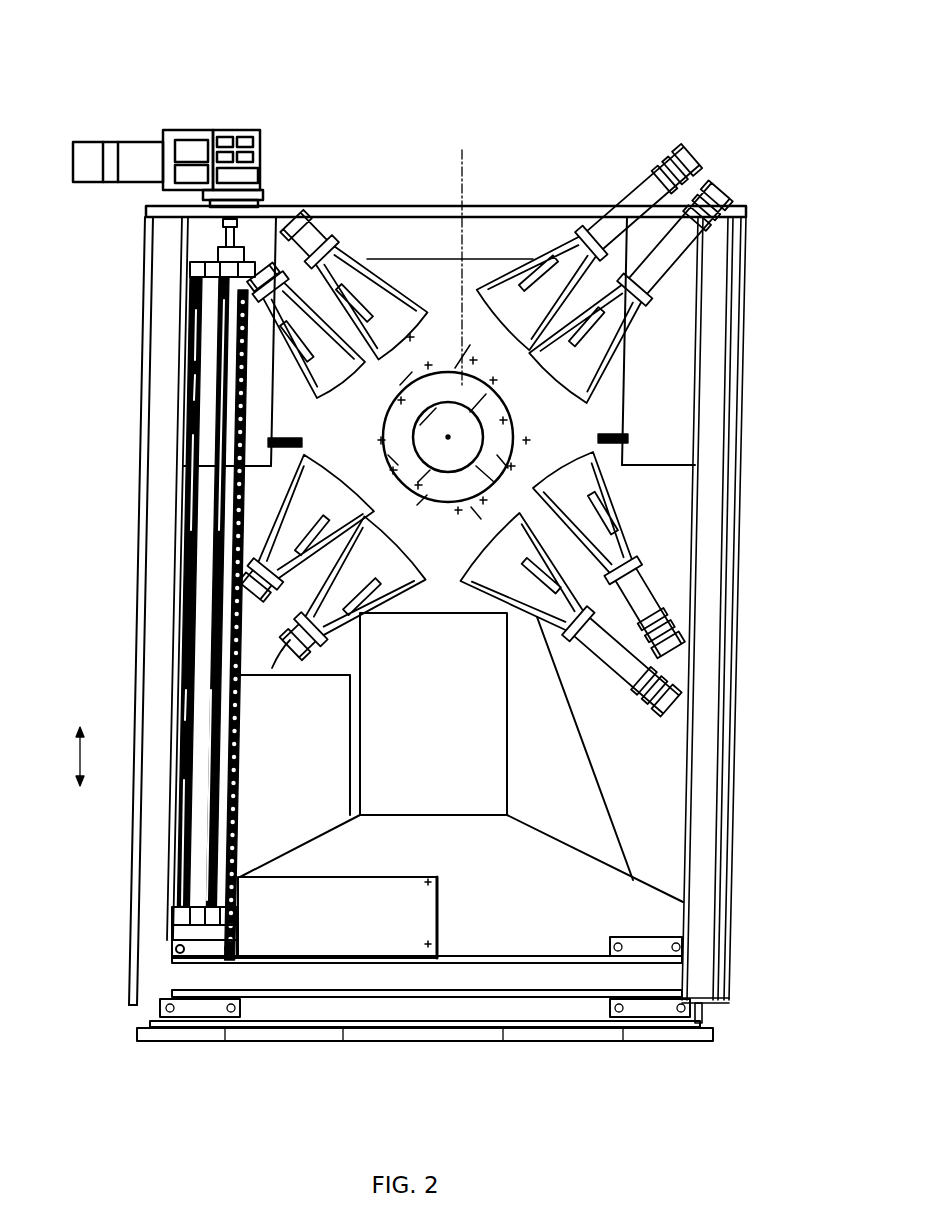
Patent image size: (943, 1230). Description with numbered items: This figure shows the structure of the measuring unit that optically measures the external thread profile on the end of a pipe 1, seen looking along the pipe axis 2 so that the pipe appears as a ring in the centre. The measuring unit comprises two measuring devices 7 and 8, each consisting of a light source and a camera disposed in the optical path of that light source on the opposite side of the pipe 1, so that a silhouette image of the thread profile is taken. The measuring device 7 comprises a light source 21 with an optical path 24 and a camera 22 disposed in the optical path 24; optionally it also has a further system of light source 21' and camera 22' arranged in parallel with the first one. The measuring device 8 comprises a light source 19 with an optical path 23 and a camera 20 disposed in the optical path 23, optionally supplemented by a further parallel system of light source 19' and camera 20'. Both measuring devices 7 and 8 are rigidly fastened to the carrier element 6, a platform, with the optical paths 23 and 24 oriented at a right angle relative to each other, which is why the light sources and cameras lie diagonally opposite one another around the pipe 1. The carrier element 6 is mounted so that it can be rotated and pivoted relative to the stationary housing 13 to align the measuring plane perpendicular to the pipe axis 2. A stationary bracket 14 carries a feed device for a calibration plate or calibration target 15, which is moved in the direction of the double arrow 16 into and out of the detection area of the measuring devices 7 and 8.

The pipe 1 is at (463, 250).
The pipe axis 2 is at (450, 438).
The carrier element 6 is at (333, 425).
The measuring device 7 is at (756, 721).
The measuring device 8 is at (700, 106).
The stationary housing 13 is at (568, 798).
The stationary bracket 14 is at (198, 837).
The calibration plate or calibration target 15 is at (325, 925).
The double arrow 16 is at (58, 756).
The light source 19 is at (206, 536).
The light source 19' is at (229, 597).
The camera 20 is at (595, 230).
The camera 20' is at (669, 285).
The light source 21 is at (348, 242).
The light source 21' is at (204, 327).
The camera 22 is at (667, 558).
The camera 22' is at (633, 624).
The optical path 23 is at (300, 477).
The optical path 24 is at (435, 322).